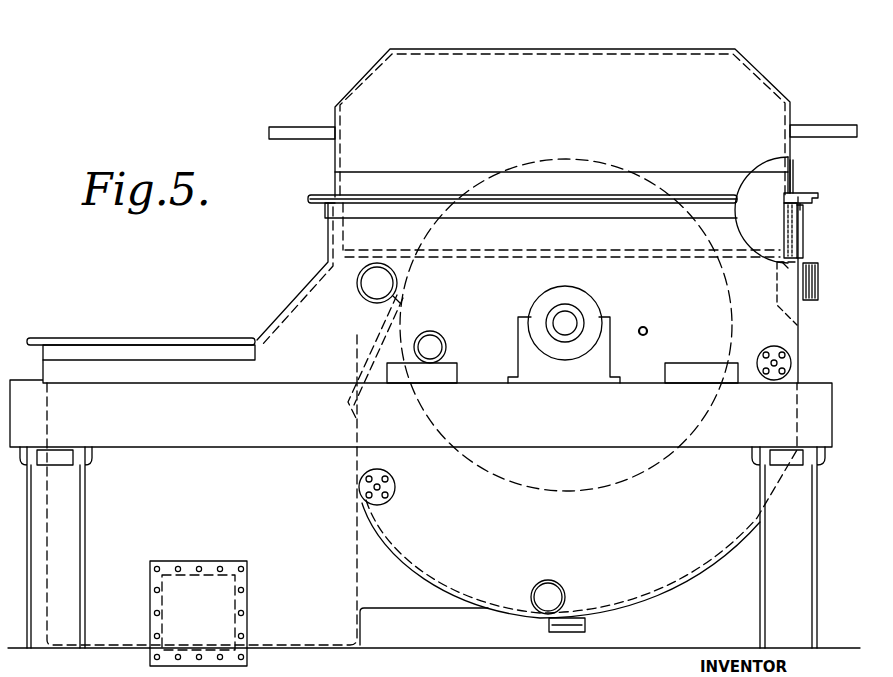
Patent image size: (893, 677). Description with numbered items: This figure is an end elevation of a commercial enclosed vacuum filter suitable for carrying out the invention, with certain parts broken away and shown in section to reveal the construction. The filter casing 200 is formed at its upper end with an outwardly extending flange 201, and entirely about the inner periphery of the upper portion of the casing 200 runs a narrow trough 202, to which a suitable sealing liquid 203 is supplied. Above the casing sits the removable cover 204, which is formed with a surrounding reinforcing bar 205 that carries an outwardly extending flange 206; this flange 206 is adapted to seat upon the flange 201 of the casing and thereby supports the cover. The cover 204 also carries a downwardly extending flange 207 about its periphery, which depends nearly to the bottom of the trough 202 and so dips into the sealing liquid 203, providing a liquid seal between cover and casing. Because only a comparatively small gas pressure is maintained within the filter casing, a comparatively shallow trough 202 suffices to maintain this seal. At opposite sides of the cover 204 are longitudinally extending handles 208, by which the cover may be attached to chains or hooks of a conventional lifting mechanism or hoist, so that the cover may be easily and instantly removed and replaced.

The filter casing 200 is at (780, 327).
The outwardly extending flange 201 is at (808, 206).
The narrow trough 202 is at (785, 228).
The sealing liquid 203 is at (797, 236).
The removable cover 204 is at (648, 62).
The reinforcing bar 205 is at (796, 177).
The outwardly extending flange 206 is at (804, 196).
The downwardly extending flange 207 is at (792, 247).
The handles 208 is at (293, 131).